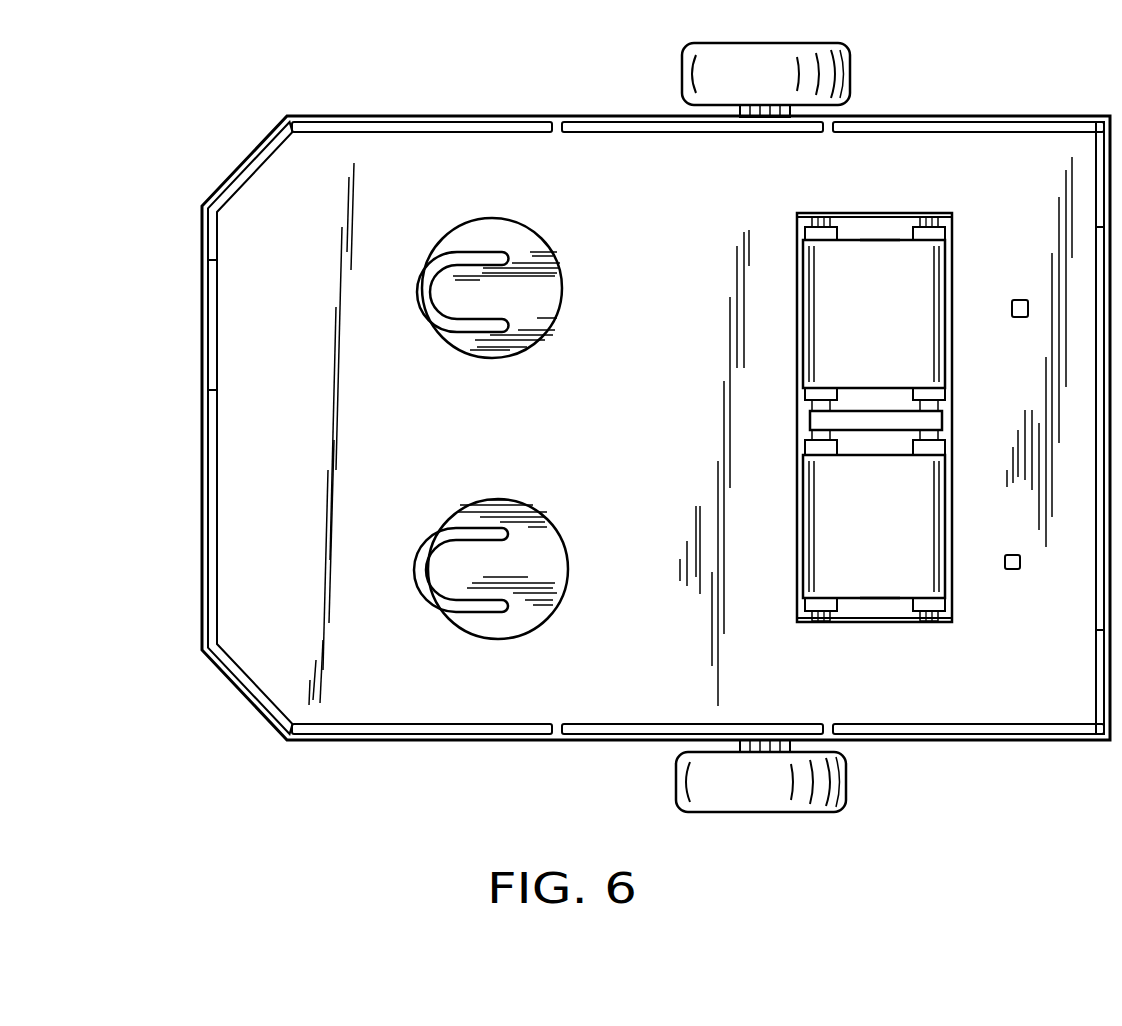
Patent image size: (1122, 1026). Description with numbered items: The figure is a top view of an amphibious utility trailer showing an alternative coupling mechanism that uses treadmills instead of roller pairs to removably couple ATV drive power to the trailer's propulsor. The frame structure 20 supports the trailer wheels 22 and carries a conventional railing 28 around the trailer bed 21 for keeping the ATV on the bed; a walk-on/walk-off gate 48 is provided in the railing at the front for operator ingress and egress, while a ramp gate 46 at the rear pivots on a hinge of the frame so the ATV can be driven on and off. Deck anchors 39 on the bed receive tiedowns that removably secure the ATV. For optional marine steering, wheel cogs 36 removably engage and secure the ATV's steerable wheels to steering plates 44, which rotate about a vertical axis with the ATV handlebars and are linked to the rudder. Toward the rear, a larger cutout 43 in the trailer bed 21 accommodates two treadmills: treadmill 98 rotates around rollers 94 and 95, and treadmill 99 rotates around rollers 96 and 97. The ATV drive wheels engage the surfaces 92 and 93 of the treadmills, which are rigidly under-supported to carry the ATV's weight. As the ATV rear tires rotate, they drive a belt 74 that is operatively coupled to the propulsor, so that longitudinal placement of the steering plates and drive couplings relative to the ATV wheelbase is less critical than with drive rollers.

The frame structure 20 is at (420, 115).
The trailer bed 21 is at (667, 228).
The trailer wheels 22 is at (682, 68).
The railing 28 is at (465, 132).
The wheel cogs 36 is at (423, 307).
The deck anchors 39 is at (1019, 300).
The cutout 43 is at (847, 213).
The steering plates 44 is at (452, 238).
The ramp gate 46 is at (1097, 588).
The walk-on/walk-off gate 48 is at (217, 320).
The drive belt 74 is at (823, 420).
The treadmill surface 92 is at (885, 313).
The treadmill surface 93 is at (858, 532).
The roller 94 is at (805, 232).
The roller 95 is at (948, 228).
The roller 96 is at (800, 614).
The roller 97 is at (947, 615).
The treadmill 98 is at (878, 240).
The treadmill 99 is at (883, 598).